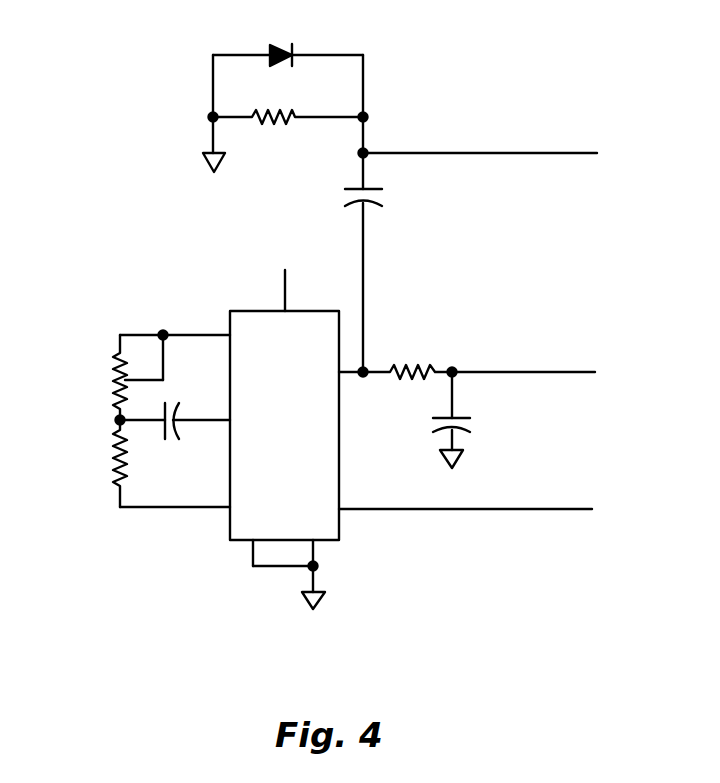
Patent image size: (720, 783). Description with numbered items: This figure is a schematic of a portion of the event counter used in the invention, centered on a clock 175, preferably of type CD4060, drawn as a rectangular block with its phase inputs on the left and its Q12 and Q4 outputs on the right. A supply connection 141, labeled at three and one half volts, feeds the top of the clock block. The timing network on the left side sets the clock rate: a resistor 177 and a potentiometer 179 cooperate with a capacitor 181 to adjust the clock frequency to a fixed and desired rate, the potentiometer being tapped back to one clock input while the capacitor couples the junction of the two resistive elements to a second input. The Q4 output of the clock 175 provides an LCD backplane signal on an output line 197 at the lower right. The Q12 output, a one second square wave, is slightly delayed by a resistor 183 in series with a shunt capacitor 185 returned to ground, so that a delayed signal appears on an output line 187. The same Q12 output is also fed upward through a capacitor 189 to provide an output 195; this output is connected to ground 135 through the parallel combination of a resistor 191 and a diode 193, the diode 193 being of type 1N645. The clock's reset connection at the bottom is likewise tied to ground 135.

The diode 193 is at (268, 49).
The resistor 191 is at (270, 122).
The ground 135 is at (222, 160).
The output 195 is at (522, 153).
The capacitor 189 is at (372, 205).
The +3.5 V supply 141 is at (285, 291).
The clock 175 is at (288, 328).
The potentiometer 179 is at (138, 345).
The capacitor 181 is at (170, 405).
The resistor 177 is at (118, 483).
The resistor 183 is at (430, 370).
The output line 187 is at (500, 372).
The capacitor 185 is at (468, 425).
The output line 197 is at (525, 509).